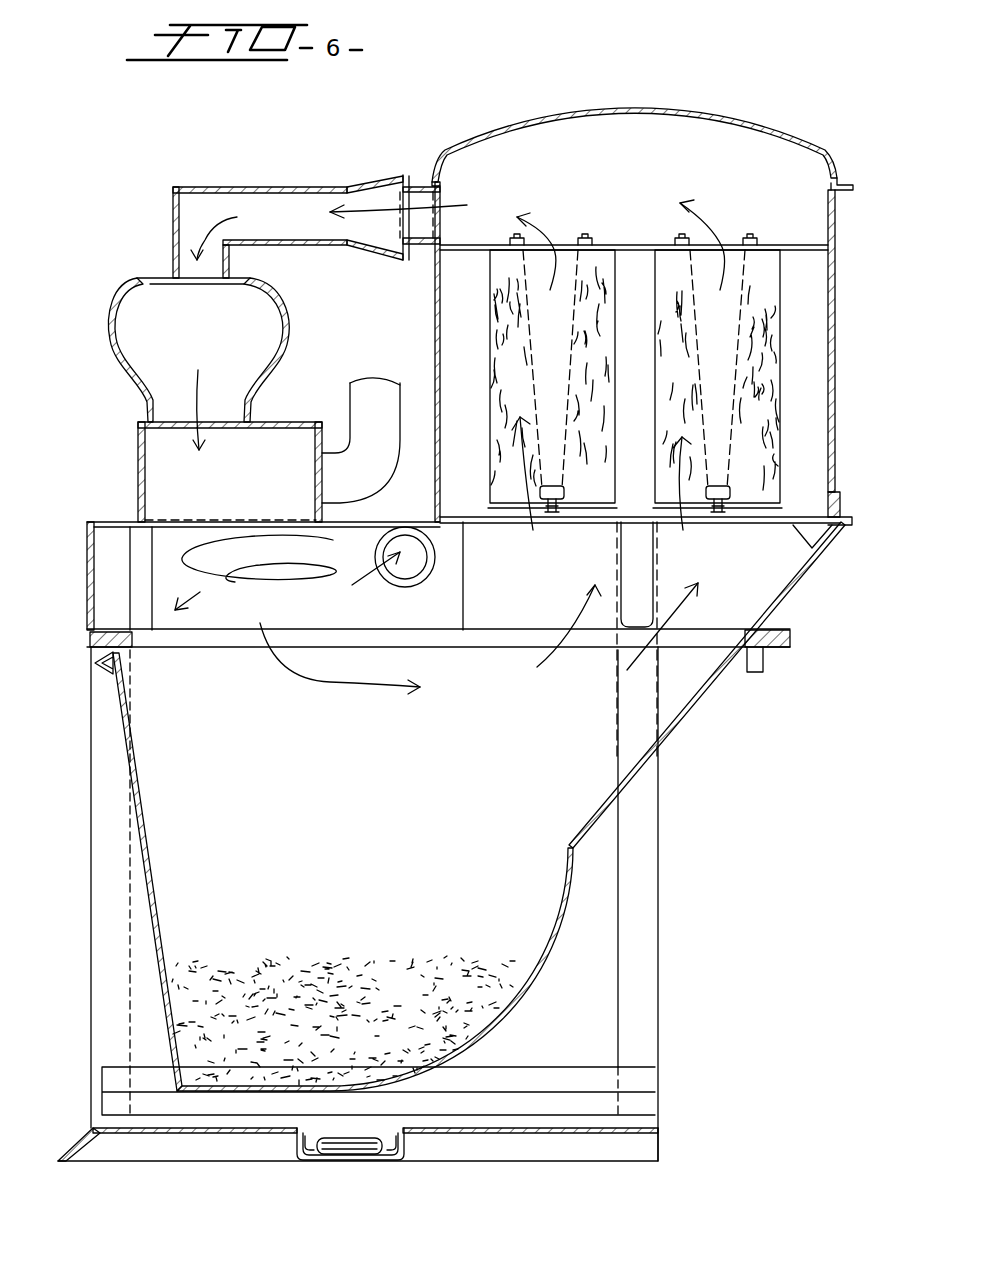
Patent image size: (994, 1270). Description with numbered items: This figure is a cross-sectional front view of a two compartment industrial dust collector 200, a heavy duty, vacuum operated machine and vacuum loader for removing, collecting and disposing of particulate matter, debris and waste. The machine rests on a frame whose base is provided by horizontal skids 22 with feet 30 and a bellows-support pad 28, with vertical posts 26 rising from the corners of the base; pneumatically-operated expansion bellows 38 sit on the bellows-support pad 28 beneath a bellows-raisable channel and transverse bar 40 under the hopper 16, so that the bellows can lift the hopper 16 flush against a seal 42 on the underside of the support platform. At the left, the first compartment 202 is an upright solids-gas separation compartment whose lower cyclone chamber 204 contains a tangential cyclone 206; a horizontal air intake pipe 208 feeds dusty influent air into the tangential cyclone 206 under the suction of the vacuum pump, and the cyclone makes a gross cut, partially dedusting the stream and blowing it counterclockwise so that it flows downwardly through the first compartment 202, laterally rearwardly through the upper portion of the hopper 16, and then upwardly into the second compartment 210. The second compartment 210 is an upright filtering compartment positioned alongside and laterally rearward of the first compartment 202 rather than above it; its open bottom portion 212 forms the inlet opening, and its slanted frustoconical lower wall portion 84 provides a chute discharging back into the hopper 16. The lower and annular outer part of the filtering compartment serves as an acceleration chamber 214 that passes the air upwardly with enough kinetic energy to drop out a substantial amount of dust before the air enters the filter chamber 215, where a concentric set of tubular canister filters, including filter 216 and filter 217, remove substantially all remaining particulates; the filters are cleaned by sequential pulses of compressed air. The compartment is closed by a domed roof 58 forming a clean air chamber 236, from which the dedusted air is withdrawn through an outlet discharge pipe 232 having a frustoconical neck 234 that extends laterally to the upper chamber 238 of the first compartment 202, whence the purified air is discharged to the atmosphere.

The hopper 16 is at (535, 978).
The skid 22 is at (175, 1162).
The vertical post 26 is at (660, 928).
The bellows-support pad 28 is at (320, 1161).
The feet 30 is at (70, 1150).
The expansion bellows 38 is at (380, 1152).
The bellows-raisable channel and transverse bar 40 is at (395, 1132).
The seal 42 is at (780, 648).
The domed roof 58 is at (690, 113).
The slanted frustoconical annular lower wall portion 84 is at (797, 575).
The two compartment industrial dust collector 200 is at (438, 128).
The first compartment 202 is at (138, 520).
The lower cyclone chamber 204 is at (87, 590).
The tangential cyclone 206 is at (130, 612).
The air intake pipe 208 is at (413, 588).
The second compartment 210 is at (836, 410).
The open bottom portion 212 is at (703, 632).
The acceleration chamber 214 is at (800, 525).
The filter chamber 215 is at (787, 296).
The tubular filter 216 is at (490, 342).
The tubular filter 217 is at (780, 362).
The outlet discharge pipe 232 is at (173, 190).
The frustoconical neck 234 is at (385, 176).
The clean air chamber 236 is at (525, 138).
The upper chamber 238 is at (145, 418).